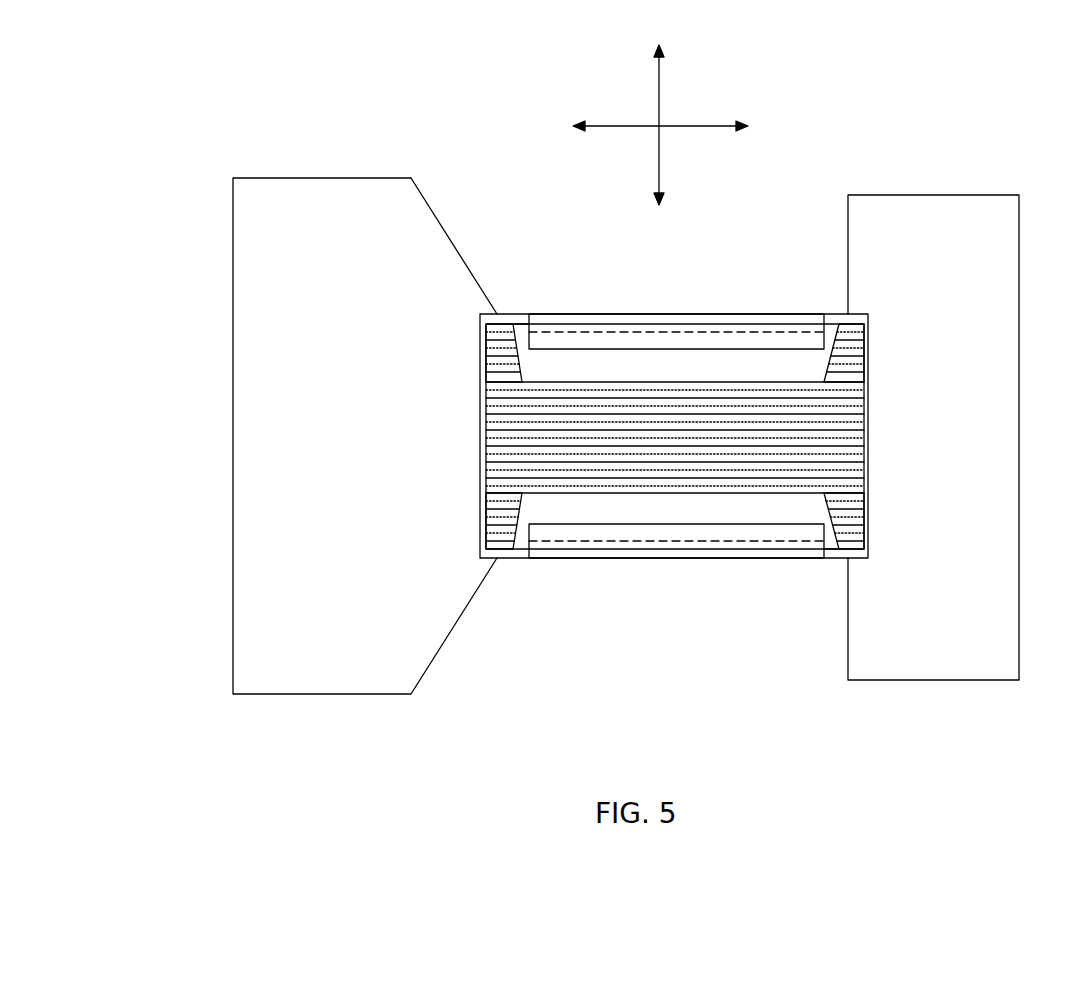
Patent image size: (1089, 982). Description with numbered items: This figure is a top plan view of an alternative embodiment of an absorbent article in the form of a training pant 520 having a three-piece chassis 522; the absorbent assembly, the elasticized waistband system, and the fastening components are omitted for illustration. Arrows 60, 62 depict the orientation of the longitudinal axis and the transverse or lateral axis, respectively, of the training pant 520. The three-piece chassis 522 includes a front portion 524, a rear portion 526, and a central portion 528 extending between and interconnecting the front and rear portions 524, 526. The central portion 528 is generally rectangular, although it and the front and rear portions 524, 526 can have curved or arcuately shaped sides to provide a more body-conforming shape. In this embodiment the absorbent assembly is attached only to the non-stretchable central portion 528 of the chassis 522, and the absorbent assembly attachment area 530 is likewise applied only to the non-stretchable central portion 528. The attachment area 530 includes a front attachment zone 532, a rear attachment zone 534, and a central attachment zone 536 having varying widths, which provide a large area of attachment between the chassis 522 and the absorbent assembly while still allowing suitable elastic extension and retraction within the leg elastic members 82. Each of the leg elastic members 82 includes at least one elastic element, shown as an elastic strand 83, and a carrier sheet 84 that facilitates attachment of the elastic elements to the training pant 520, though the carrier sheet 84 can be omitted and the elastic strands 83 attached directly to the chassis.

The training pant 520 is at (183, 110).
The three-piece chassis 522 is at (339, 200).
The front portion 524 is at (927, 213).
The rear portion 526 is at (400, 228).
The central portion 528 is at (835, 322).
The absorbent assembly attachment area 530 is at (478, 550).
The front attachment zone 532 is at (855, 385).
The rear attachment zone 534 is at (495, 443).
The central attachment zone 536 is at (708, 405).
The longitudinal axis arrow 60 is at (685, 123).
The transverse axis arrow 62 is at (657, 92).
The leg elastic members 82 is at (527, 323).
The elastic strand 83 is at (571, 332).
The carrier sheet 84 is at (643, 326).